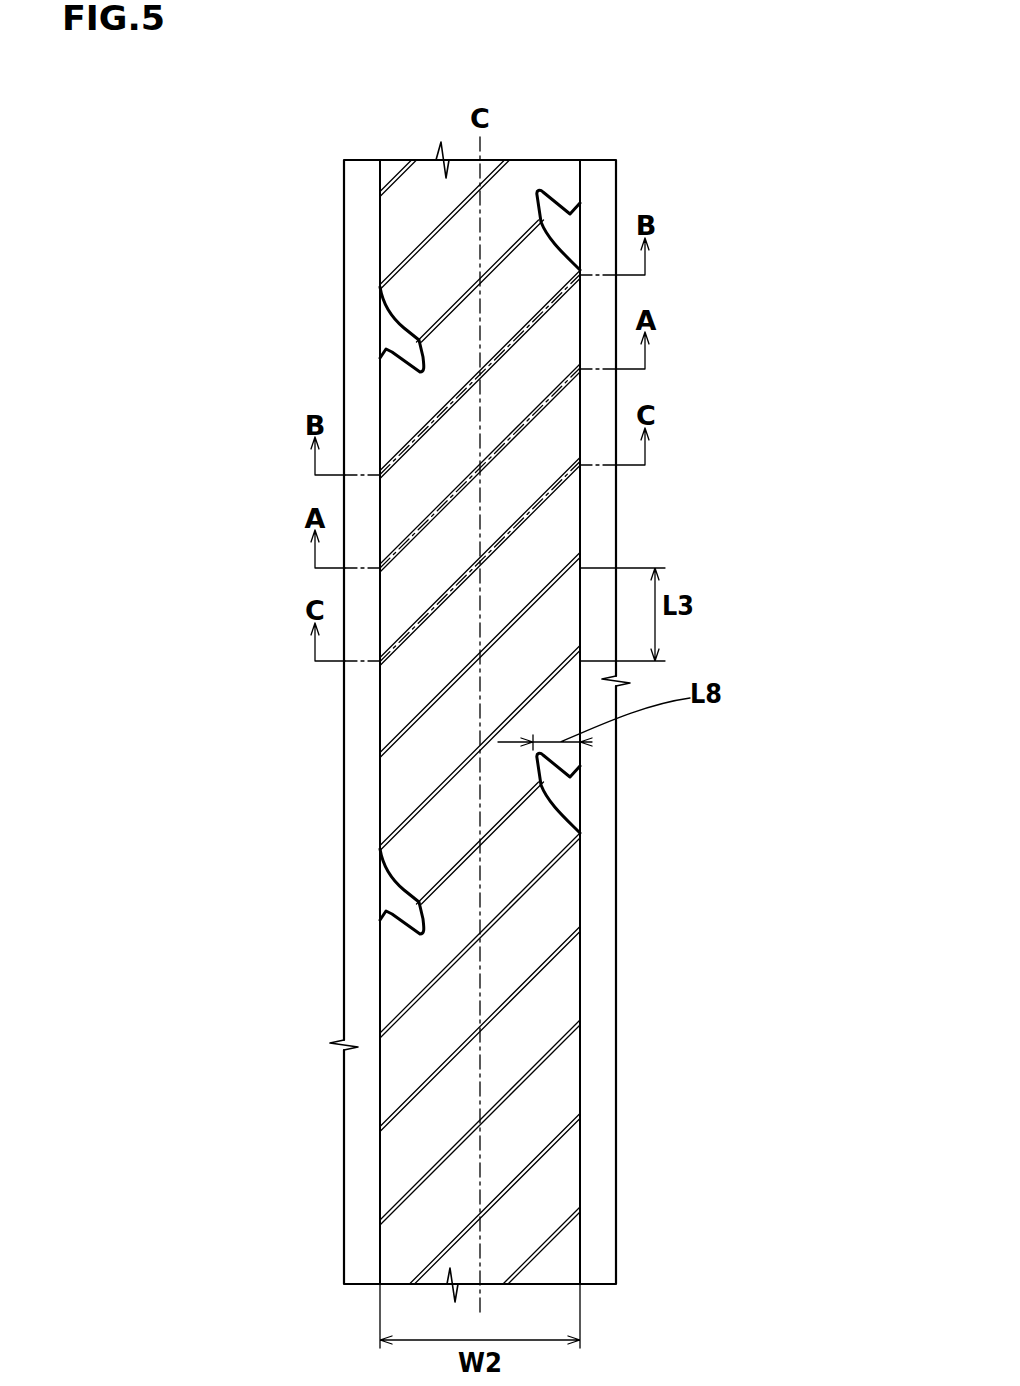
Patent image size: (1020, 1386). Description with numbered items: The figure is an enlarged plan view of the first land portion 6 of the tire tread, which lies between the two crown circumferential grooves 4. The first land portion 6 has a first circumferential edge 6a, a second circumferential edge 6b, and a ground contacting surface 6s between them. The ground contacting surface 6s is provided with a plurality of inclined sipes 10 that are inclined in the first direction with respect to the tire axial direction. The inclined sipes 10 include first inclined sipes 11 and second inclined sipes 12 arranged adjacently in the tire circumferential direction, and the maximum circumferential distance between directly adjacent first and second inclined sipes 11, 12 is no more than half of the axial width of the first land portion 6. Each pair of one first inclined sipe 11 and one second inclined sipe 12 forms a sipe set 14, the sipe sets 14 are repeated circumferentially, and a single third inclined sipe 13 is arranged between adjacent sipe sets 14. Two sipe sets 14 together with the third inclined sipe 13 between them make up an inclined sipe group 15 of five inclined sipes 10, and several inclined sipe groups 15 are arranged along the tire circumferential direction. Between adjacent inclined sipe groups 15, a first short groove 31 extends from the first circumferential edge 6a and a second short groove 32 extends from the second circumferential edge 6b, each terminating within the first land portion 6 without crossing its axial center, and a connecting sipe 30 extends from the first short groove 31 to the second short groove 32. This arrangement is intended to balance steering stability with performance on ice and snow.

The crown circumferential groove 4 is at (364, 191).
The first land portion 6 is at (481, 683).
The first circumferential edge 6a is at (580, 1252).
The second circumferential edge 6b is at (380, 1252).
The ground contacting surface 6s is at (417, 1150).
The inclined sipe 10 is at (492, 683).
The first inclined sipe 11 is at (547, 405).
The second inclined sipe 12 is at (547, 313).
The third inclined sipe 13 is at (547, 493).
The sipe set 14 is at (727, 280).
The inclined sipe group 15 is at (745, 905).
The connecting sipe 30 is at (485, 508).
The first short groove 31 is at (560, 206).
The second short groove 32 is at (397, 345).